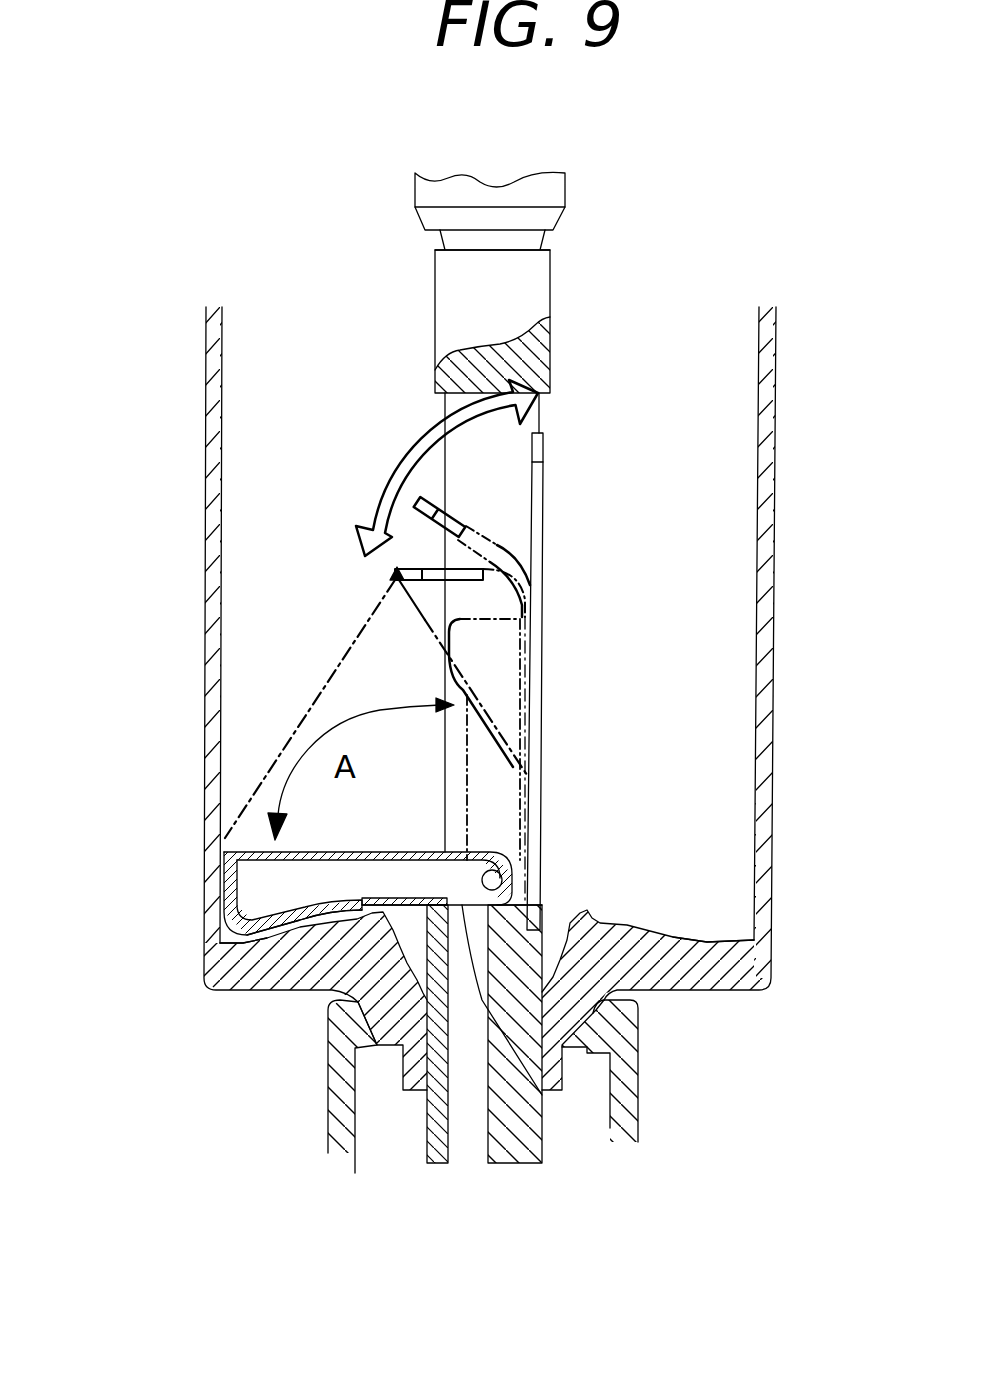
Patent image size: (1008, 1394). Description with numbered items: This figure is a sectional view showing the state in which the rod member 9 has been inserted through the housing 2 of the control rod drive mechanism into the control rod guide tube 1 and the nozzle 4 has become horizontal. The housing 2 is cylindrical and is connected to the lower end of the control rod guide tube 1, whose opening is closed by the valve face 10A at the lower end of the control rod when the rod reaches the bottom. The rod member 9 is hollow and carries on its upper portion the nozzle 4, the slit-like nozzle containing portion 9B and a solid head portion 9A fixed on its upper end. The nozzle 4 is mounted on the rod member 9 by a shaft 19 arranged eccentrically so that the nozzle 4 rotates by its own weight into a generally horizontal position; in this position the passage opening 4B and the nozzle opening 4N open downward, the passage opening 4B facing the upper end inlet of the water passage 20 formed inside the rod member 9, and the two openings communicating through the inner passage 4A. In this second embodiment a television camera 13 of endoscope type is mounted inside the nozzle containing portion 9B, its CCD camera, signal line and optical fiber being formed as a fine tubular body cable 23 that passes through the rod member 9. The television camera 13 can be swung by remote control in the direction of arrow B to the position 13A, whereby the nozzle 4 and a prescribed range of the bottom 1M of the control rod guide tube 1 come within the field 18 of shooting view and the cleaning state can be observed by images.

The control rod guide tube 1 is at (760, 991).
The bottom of the control rod guide tube 1M is at (235, 920).
The housing 2 is at (640, 1090).
The nozzle 4 is at (467, 755).
The inner passage 4A is at (360, 880).
The passage opening 4B is at (542, 1095).
The nozzle opening 4N is at (300, 910).
The rod member 9 is at (545, 921).
The head portion 9A is at (552, 300).
The nozzle containing portion 9B is at (467, 497).
The valve face 10A is at (528, 220).
The television camera 13 is at (527, 442).
The camera position 13A is at (395, 571).
The field of shooting view 18 is at (437, 642).
The shaft 19 is at (502, 870).
The water passage 20 is at (460, 1110).
The body cable 23 is at (543, 665).